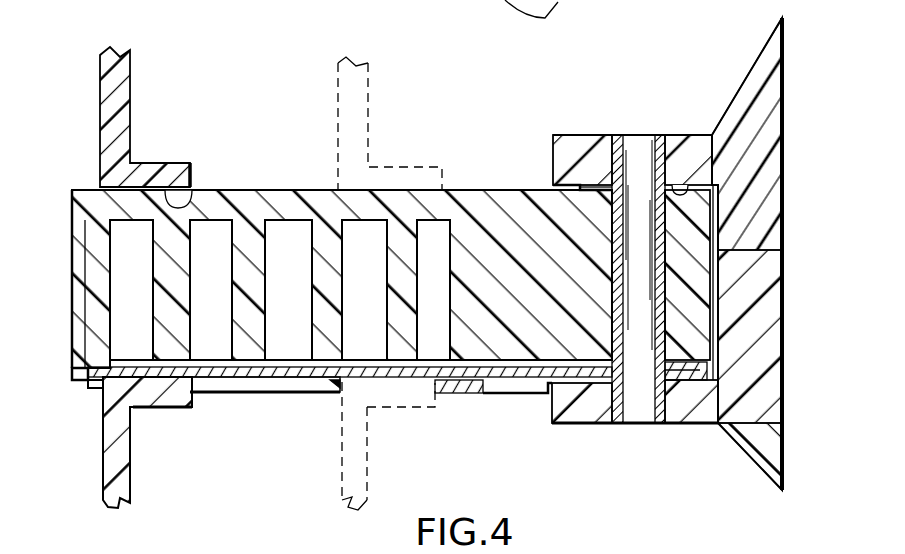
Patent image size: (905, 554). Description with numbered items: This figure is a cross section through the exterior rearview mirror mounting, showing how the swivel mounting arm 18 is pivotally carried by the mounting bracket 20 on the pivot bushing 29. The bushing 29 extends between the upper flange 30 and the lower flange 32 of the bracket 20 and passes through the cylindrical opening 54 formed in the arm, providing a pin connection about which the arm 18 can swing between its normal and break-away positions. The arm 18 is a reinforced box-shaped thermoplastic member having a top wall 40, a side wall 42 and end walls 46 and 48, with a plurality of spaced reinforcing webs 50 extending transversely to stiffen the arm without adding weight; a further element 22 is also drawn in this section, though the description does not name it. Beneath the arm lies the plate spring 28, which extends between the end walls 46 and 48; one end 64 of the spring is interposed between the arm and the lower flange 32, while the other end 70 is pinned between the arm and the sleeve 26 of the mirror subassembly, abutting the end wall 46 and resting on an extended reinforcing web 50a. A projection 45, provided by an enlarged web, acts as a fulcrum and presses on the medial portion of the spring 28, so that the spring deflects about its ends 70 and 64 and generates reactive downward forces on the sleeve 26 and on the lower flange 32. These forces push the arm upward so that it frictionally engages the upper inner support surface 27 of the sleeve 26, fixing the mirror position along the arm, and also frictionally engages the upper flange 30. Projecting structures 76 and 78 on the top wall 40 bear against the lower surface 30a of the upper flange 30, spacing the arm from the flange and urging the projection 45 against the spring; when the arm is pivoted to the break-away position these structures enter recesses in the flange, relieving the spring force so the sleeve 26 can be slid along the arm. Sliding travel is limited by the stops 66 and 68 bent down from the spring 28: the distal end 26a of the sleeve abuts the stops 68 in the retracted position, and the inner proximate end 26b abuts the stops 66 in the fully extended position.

The swivel mounting arm 18 is at (323, 240).
The mounting bracket 20 is at (714, 84).
The wall 22 is at (125, 77).
The sleeve 26 is at (177, 250).
The distal end 26a is at (195, 403).
The inner proximate end 26b is at (97, 187).
The support surface 27 is at (203, 192).
The spring 28 is at (250, 395).
The pivot bushing 29 is at (667, 282).
The upper flange 30 is at (577, 143).
The lower surface 30a is at (687, 178).
The lower flange 32 is at (580, 427).
The top wall 40 is at (440, 200).
The side wall 42 is at (728, 553).
The projection 45 is at (483, 383).
The end wall 46 is at (77, 313).
The end wall 48 is at (693, 308).
The reinforcing webs 50 is at (307, 195).
The extended reinforcing web 50a is at (132, 412).
The cylindrical opening 54 is at (652, 243).
The end of spring 64 is at (687, 382).
The stops 66 is at (93, 390).
The stops 68 is at (447, 397).
The end of spring 70 is at (77, 374).
The projecting structure 76 is at (593, 185).
The projecting structure 78 is at (712, 170).